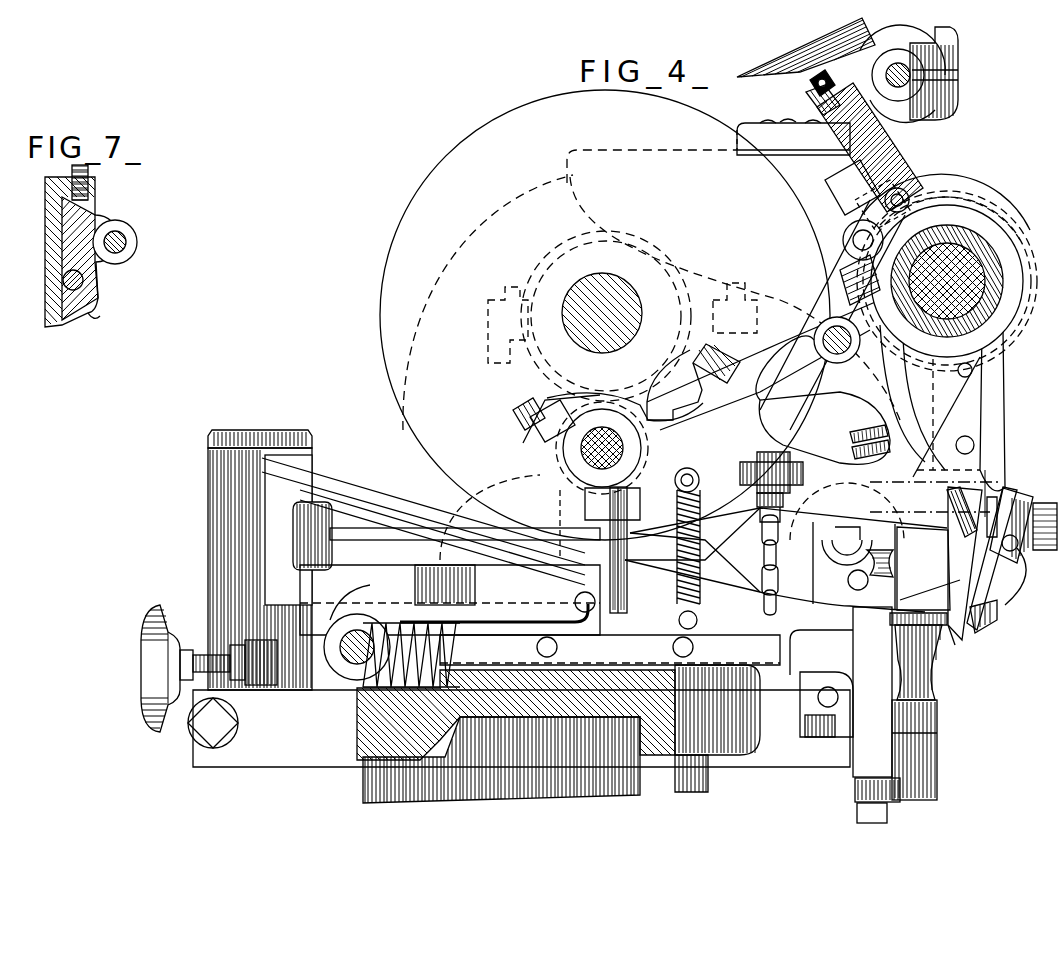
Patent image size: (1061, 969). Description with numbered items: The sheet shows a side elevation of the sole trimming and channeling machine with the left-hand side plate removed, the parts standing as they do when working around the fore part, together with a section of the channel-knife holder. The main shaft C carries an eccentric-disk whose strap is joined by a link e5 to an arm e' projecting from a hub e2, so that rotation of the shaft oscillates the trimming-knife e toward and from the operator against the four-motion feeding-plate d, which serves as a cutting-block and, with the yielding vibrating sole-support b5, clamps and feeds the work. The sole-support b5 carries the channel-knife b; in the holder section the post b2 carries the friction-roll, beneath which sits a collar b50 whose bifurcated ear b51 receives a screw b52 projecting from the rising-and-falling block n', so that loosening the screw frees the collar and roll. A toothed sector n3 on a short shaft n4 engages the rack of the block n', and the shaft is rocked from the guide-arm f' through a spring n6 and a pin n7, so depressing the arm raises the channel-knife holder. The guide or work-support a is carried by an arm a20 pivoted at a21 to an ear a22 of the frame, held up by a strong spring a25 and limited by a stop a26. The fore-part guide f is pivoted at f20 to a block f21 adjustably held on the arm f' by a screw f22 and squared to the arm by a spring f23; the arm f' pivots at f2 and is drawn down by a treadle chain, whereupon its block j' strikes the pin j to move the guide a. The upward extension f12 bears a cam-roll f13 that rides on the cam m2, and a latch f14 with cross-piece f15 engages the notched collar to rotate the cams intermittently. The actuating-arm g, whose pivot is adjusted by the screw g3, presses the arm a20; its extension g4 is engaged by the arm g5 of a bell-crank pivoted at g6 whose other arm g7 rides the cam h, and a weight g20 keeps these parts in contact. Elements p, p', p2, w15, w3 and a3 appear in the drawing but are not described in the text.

In FIG. 7, the rising-and-falling block n' is at (65, 246).
In FIG. 7, the collar b50 is at (130, 236).
In FIG. 4, the collar b50 is at (925, 755).
In FIG. 7, the post b2 is at (127, 243).
In FIG. 7, the screw b52 is at (63, 282).
In FIG. 4, the screw b52 is at (860, 813).
In FIG. 7, the ear b51 is at (100, 312).
In FIG. 4, the ear b51 is at (858, 790).
In FIG. 4, the main shaft C is at (620, 300).
In FIG. 4, the weight g20 is at (318, 520).
In FIG. 4, the ear a22 is at (345, 600).
In FIG. 4, the pivot a21 is at (368, 632).
In FIG. 4, the spring a25 is at (526, 620).
In FIG. 4, the toothed sector n3 is at (790, 630).
In FIG. 4, the pivot shaft f2 is at (585, 462).
In FIG. 4, the adjusting-screw g3 is at (522, 405).
In FIG. 4, the actuating-arm g is at (590, 500).
In FIG. 4, the upward extension g4 is at (650, 404).
In FIG. 4, the bell-crank arm g5 is at (690, 352).
In FIG. 4, the pin n7 is at (628, 572).
In FIG. 4, the spring n6 is at (702, 562).
In FIG. 4, the guide-arm a20 is at (740, 510).
In FIG. 4, the blade p2 is at (790, 62).
In FIG. 4, the blade holder p is at (898, 63).
In FIG. 4, the pivot p' is at (902, 92).
In FIG. 4, the cylinder w15 is at (945, 100).
In FIG. 4, the cross-piece f15 is at (812, 86).
In FIG. 4, the latch f14 is at (818, 108).
In FIG. 4, the upward extension f12 is at (890, 148).
In FIG. 4, the cam-roll f13 is at (858, 200).
In FIG. 4, the housing w3 is at (1010, 222).
In FIG. 4, the main shaft a3 is at (947, 281).
In FIG. 4, the hub e2 is at (990, 278).
In FIG. 4, the cam h is at (990, 320).
In FIG. 4, the cam m2 is at (862, 245).
In FIG. 4, the bell-crank arm g7 is at (840, 250).
In FIG. 4, the pivot g6 is at (822, 328).
In FIG. 4, the link e5 is at (812, 468).
In FIG. 4, the knife arm e' is at (911, 485).
In FIG. 4, the stop a26 is at (962, 440).
In FIG. 4, the four-motion feeding-plate d is at (952, 566).
In FIG. 4, the trimming-knife e is at (930, 589).
In FIG. 4, the pin j is at (965, 563).
In FIG. 4, the block j' is at (992, 540).
In FIG. 4, the block f21 is at (1024, 500).
In FIG. 4, the pivot f20 is at (1009, 533).
In FIG. 4, the screw f22 is at (1047, 517).
In FIG. 4, the spring f23 is at (1022, 578).
In FIG. 4, the fore-part guide f is at (986, 622).
In FIG. 4, the guide-arm f' is at (977, 481).
In FIG. 4, the guide or work-support a is at (955, 643).
In FIG. 4, the channel-knife b is at (925, 648).
In FIG. 4, the sole-support b5 is at (928, 680).
In FIG. 4, the short shaft n4 is at (822, 703).